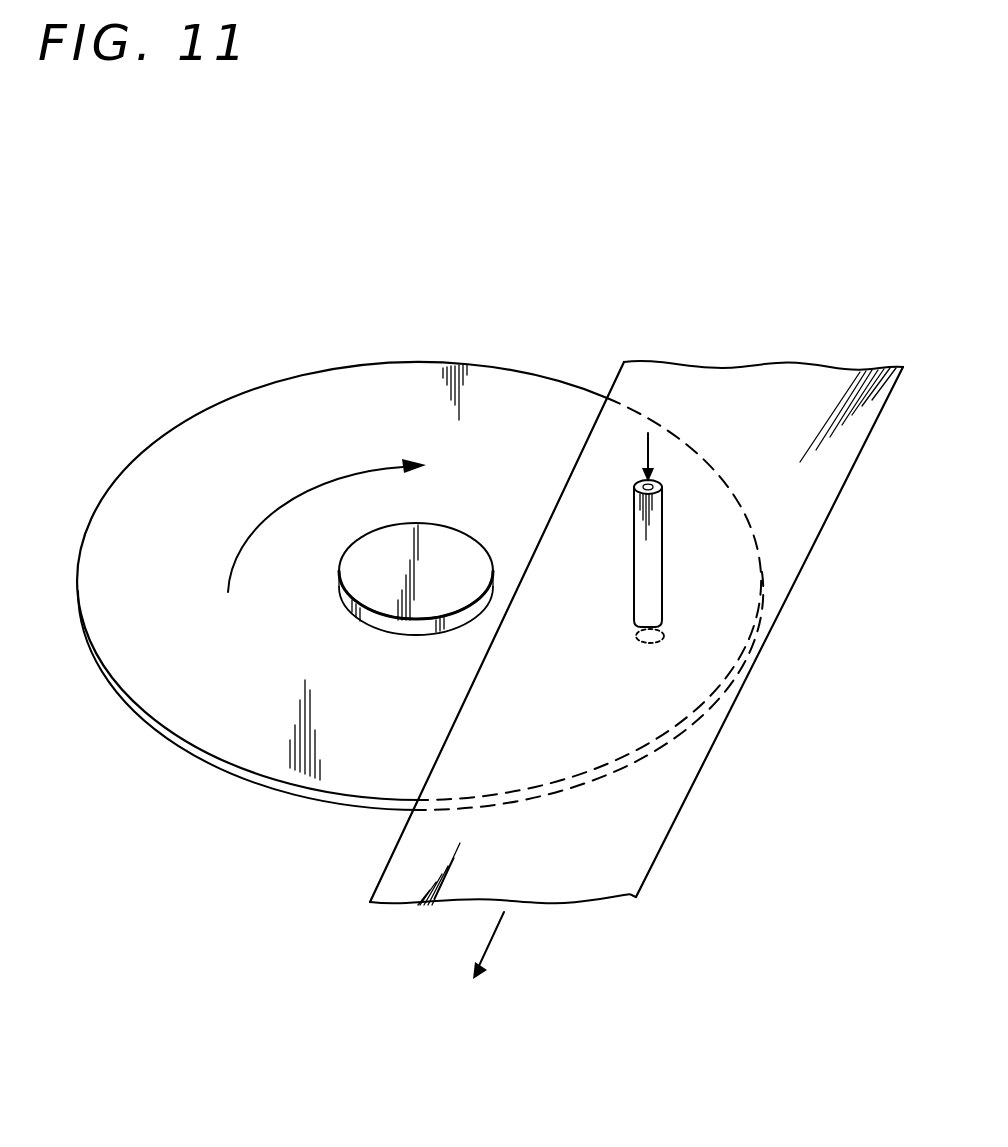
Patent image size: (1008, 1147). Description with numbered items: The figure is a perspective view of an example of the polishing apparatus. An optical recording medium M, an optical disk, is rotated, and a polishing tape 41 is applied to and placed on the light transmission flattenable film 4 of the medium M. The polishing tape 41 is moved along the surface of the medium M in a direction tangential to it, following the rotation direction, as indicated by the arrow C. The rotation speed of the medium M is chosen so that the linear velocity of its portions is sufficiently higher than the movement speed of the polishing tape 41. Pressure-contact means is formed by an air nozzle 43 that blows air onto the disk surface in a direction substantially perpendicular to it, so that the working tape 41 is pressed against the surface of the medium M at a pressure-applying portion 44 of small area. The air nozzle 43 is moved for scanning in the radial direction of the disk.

The light transmission flattenable film 4 is at (372, 398).
The optical recording medium M is at (506, 368).
The polishing tape 41 is at (692, 378).
The air nozzle 43 is at (664, 548).
The pressure-applying portion 44 is at (650, 643).
The direction of tape movement C is at (496, 935).